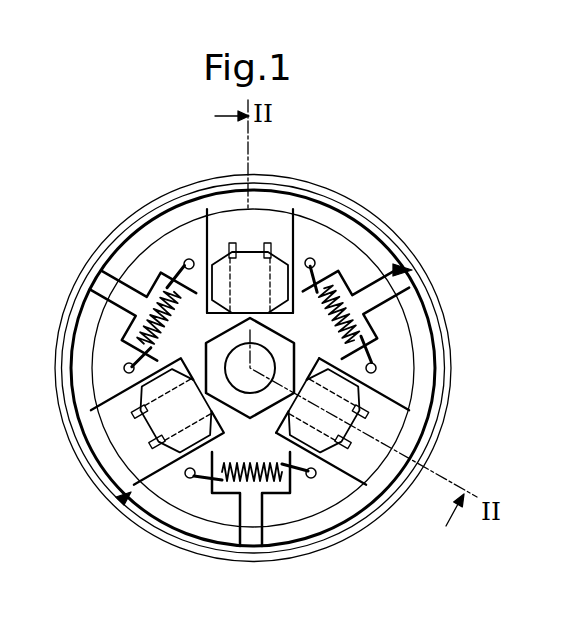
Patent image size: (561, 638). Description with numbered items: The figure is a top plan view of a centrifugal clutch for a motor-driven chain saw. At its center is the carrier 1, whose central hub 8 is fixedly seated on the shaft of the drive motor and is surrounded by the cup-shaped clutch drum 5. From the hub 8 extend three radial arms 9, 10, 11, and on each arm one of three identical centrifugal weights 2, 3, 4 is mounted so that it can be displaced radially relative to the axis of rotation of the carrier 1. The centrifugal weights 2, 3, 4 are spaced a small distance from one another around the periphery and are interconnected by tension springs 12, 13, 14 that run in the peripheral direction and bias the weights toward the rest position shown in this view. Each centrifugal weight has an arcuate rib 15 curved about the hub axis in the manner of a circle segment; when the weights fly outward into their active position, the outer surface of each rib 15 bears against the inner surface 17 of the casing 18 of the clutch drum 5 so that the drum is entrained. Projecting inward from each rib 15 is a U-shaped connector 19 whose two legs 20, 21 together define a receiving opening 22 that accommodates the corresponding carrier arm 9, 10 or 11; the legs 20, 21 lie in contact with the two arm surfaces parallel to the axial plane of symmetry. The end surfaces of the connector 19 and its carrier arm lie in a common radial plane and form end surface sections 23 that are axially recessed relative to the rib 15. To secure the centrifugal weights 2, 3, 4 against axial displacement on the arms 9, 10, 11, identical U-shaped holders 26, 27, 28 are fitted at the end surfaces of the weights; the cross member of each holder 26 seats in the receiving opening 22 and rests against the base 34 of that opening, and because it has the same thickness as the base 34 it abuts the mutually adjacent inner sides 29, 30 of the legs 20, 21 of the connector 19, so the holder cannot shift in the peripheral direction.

The carrier 1 is at (205, 478).
The centrifugal weight 2 is at (412, 270).
The centrifugal weight 3 is at (382, 440).
The centrifugal weight 4 is at (117, 500).
The clutch drum 5 is at (438, 325).
The hub 8 is at (362, 384).
The arm 9 is at (204, 338).
The arm 10 is at (353, 410).
The arm 11 is at (130, 395).
The tension spring 12 is at (373, 318).
The tension spring 13 is at (262, 488).
The tension spring 14 is at (143, 300).
The arcuate rib 15 is at (316, 207).
The inner surface 17 is at (170, 200).
The casing 18 is at (447, 386).
The U-shaped connector 19 is at (313, 259).
The leg 20 is at (208, 310).
The leg 21 is at (293, 321).
The receiving opening 22 is at (355, 260).
The end surface section 23 is at (218, 218).
The U-shaped holder 26 is at (248, 262).
The U-shaped holder 27 is at (335, 455).
The U-shaped holder 28 is at (148, 466).
The inner side 29 is at (302, 232).
The inner side 30 is at (230, 252).
The base 34 is at (250, 250).